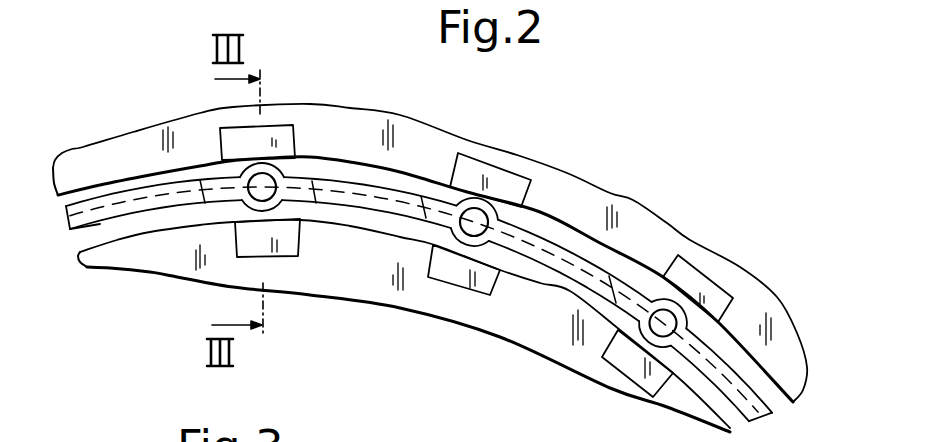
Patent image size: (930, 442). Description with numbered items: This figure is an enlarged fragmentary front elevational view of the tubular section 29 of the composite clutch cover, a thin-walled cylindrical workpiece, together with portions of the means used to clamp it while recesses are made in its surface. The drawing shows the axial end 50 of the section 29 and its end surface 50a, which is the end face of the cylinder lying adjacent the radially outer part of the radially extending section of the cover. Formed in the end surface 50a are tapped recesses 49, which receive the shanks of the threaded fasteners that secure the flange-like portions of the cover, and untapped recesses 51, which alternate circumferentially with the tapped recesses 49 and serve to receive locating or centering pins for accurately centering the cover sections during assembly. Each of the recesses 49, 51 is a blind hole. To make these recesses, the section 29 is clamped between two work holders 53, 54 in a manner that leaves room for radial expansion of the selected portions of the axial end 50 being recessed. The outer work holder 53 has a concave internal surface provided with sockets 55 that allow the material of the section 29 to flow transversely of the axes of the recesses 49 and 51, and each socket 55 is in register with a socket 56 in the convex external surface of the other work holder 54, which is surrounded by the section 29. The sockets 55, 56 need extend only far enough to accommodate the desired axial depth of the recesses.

The tubular section 29 is at (104, 236).
The tapped recess 49 is at (270, 180).
The axial end 50 is at (119, 208).
The end surface 50a is at (370, 205).
The untapped recess 51 is at (476, 220).
The outer work holder 53 is at (647, 240).
The inner work holder 54 is at (530, 333).
The socket 55 is at (517, 187).
The socket 56 is at (452, 275).